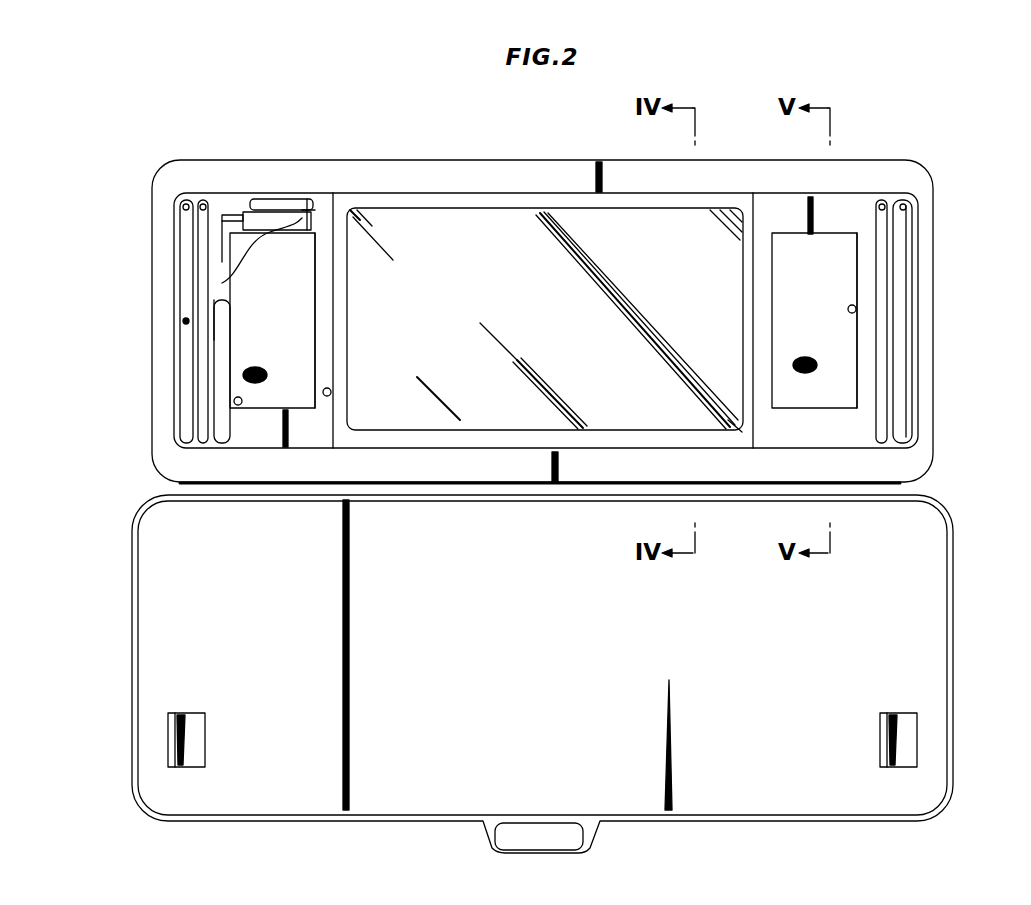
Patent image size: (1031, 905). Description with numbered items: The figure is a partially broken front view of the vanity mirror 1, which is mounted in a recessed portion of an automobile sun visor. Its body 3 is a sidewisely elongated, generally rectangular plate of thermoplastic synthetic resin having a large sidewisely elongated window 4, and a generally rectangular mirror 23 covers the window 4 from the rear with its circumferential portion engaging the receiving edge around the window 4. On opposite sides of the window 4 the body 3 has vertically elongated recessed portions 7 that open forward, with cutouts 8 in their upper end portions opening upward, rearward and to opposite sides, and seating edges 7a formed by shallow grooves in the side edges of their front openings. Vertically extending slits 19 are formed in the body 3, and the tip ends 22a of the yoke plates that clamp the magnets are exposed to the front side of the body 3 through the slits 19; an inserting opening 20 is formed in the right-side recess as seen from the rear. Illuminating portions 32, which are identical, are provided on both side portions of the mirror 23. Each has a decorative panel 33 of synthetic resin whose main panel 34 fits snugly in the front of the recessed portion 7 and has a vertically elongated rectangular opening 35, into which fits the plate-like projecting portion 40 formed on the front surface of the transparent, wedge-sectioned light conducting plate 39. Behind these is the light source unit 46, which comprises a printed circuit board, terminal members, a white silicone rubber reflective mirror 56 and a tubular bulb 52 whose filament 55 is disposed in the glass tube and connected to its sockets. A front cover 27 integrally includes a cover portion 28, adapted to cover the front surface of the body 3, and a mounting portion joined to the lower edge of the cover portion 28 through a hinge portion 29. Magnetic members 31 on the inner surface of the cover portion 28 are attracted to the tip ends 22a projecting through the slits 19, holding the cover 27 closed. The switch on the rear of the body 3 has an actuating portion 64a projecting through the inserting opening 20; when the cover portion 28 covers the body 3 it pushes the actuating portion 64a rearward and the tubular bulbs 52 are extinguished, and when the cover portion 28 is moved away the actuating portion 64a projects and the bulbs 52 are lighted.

The vanity mirror 1 is at (948, 124).
The body 3 is at (152, 268).
The window 4 is at (434, 414).
The recessed portion 7 is at (331, 392).
The seating edge 7a is at (222, 283).
The cutout 8 is at (229, 200).
The slit 19 is at (203, 240).
The inserting opening 20 is at (183, 321).
The tip end of yoke plate 22a is at (198, 198).
The mirror 23 is at (500, 405).
The front cover 27 is at (133, 636).
The cover portion 28 is at (155, 590).
The hinge portion 29 is at (178, 487).
The magnetic member 31 is at (166, 737).
The illuminating portion 32 is at (300, 352).
The decorative panel 33 is at (264, 430).
The main panel 34 is at (300, 430).
The rectangular opening 35 is at (240, 406).
The light conducting plate 39 is at (300, 320).
The projecting portion 40 is at (300, 282).
The light source unit 46 is at (305, 210).
The tubular bulb 52 is at (262, 210).
The filament 55 is at (283, 200).
The reflective mirror 56 is at (304, 206).
The actuating portion 64a is at (198, 334).